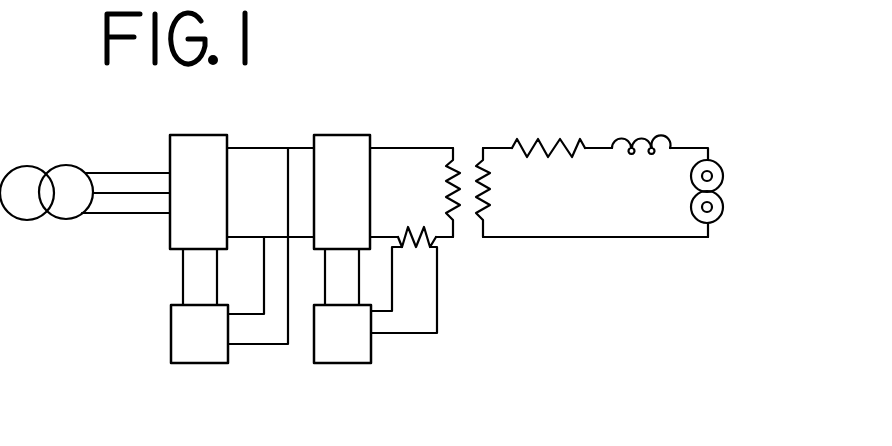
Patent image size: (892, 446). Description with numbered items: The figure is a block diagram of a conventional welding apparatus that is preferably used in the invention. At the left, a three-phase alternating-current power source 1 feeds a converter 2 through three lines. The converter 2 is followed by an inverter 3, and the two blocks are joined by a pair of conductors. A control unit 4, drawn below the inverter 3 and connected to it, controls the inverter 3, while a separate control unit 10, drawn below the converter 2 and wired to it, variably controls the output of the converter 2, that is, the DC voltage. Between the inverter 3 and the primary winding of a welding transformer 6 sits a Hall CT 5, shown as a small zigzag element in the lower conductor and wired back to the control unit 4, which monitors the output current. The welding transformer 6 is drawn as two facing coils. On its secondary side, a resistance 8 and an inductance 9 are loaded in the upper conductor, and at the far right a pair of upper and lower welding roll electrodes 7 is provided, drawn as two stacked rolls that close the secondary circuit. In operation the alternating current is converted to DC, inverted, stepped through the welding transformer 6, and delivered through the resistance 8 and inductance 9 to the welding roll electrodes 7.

The three-phase alternating-current power source 1 is at (62, 164).
The converter 2 is at (202, 135).
The inverter 3 is at (349, 135).
The control unit 4 is at (372, 345).
The Hall CT 5 is at (408, 229).
The welding transformer 6 is at (468, 153).
The welding roll electrodes 7 is at (724, 206).
The resistance 8 is at (542, 147).
The inductance 9 is at (641, 138).
The control unit 10 is at (171, 336).